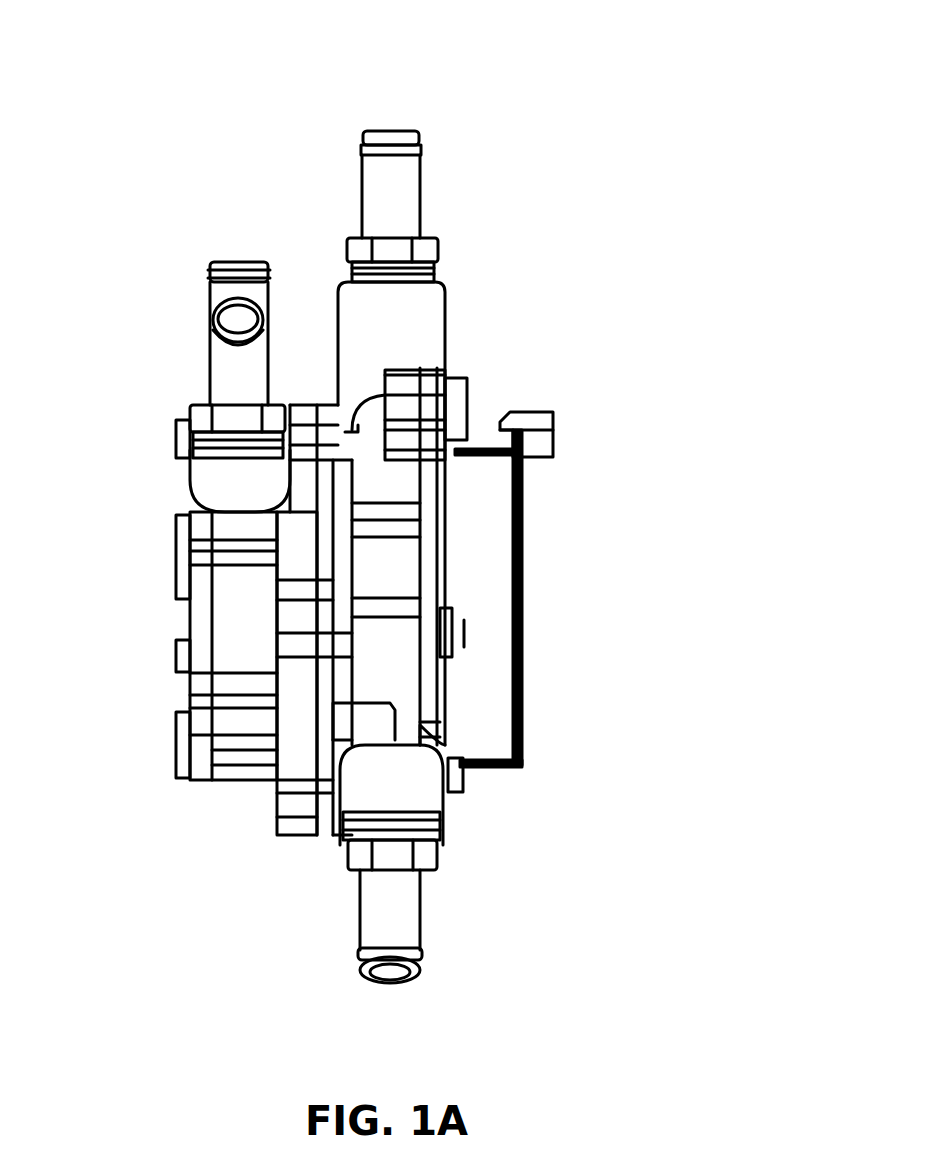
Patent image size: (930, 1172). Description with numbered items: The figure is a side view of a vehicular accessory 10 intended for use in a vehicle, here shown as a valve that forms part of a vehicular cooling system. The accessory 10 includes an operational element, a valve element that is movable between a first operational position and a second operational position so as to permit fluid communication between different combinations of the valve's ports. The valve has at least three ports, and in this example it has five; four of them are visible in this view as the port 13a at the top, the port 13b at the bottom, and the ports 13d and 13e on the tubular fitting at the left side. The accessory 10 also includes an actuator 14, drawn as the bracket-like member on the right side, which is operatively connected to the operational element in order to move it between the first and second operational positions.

The vehicular accessory 10 is at (258, 128).
The port 13a is at (398, 196).
The port 13b is at (405, 915).
The port 13d is at (157, 360).
The port 13e is at (207, 290).
The actuator 14 is at (520, 598).